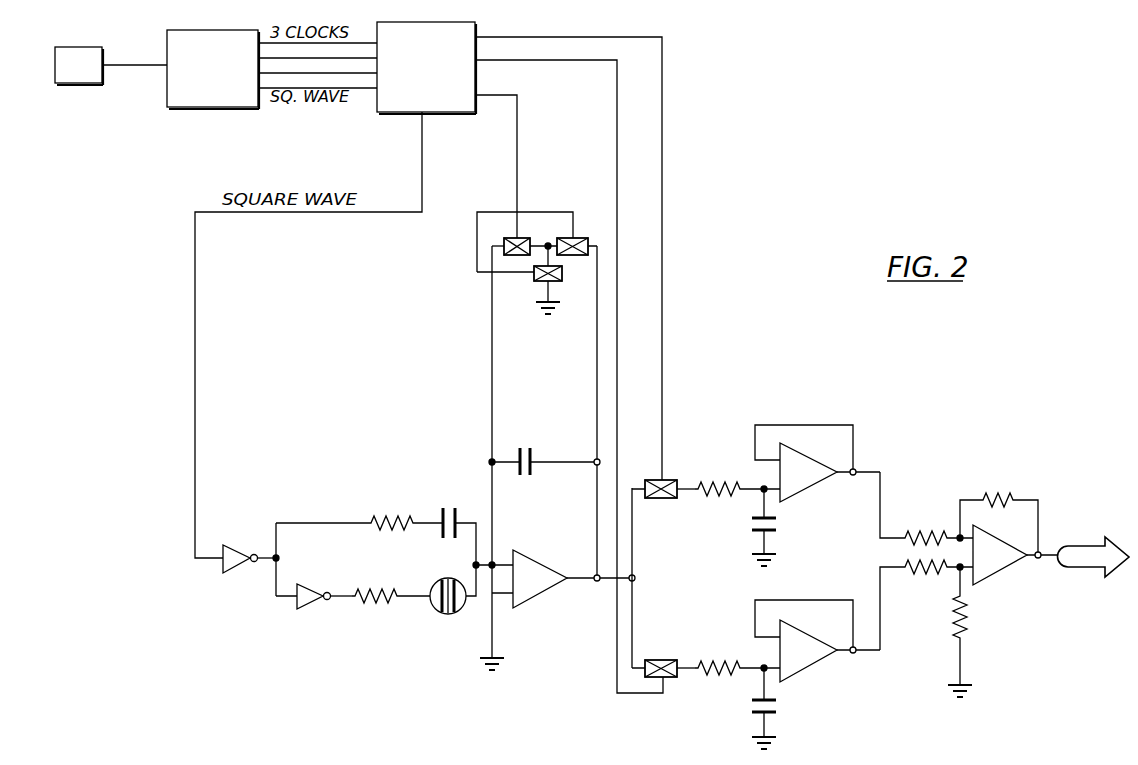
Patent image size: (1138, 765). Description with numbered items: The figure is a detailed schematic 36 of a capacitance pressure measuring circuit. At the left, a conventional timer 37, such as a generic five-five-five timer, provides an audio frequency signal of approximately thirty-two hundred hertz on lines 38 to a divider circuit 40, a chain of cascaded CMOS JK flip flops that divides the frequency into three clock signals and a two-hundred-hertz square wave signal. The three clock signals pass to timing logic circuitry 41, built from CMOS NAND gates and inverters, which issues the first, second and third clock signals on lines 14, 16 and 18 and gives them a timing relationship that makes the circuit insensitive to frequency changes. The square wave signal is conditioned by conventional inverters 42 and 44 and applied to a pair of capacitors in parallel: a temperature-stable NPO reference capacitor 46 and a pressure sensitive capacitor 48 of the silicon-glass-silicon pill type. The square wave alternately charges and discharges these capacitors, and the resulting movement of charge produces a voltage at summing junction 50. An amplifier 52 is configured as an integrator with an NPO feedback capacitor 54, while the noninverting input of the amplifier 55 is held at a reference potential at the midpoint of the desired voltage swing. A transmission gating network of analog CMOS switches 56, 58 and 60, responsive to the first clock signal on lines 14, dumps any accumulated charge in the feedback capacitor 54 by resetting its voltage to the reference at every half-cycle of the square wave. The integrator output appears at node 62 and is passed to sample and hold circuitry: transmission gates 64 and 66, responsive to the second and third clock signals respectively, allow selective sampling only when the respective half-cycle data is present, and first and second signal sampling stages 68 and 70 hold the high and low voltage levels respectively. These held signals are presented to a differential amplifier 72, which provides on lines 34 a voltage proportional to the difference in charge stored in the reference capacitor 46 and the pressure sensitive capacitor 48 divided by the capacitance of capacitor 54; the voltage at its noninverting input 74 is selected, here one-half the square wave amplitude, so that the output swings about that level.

The first clock signal line 14 is at (517, 153).
The second clock signal line 16 is at (662, 163).
The third clock signal line 18 is at (617, 153).
The output lines 34 is at (1073, 547).
The detailed schematic 36 is at (808, 190).
The timer 37 is at (80, 84).
The timer output lines 38 is at (142, 60).
The divider circuit 40 is at (206, 104).
The timing logic circuitry 41 is at (399, 108).
The inverter 42 is at (228, 571).
The inverter 44 is at (309, 607).
The reference capacitor 46 is at (440, 505).
The pressure sensitive capacitor 48 is at (438, 613).
The summing junction 50 is at (492, 563).
The amplifier 52 is at (542, 594).
The feedback capacitor 54 is at (531, 452).
The noninverting input of the amplifier 55 is at (500, 670).
The transmission gate 56 is at (504, 245).
The transmission gate 58 is at (562, 274).
The transmission gate 60 is at (581, 238).
The node 62 is at (636, 578).
The transmission gate 64 is at (668, 480).
The transmission gate 66 is at (674, 677).
The first signal sampling stage 68 is at (816, 426).
The second signal sampling stage 70 is at (826, 658).
The differential amplifier 72 is at (998, 577).
The noninverting input of the differential amplifier 74 is at (970, 683).